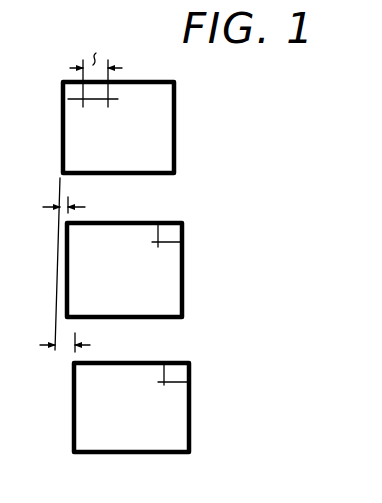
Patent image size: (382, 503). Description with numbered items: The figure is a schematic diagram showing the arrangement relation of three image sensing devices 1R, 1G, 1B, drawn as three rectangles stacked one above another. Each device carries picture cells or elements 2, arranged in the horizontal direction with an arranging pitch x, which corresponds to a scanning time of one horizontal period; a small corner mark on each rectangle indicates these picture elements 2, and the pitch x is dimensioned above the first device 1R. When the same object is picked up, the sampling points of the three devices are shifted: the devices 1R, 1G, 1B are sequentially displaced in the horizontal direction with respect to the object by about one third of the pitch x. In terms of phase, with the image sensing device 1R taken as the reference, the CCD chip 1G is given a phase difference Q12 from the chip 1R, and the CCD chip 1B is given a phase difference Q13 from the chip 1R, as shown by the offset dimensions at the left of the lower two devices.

The image sensing device 1R is at (176, 140).
The image sensing device 1G is at (185, 292).
The image sensing device 1B is at (192, 413).
The picture cell 2 is at (73, 92).
The arranging pitch x is at (96, 41).
The phase difference Q12 is at (64, 203).
The phase difference Q13 is at (57, 350).